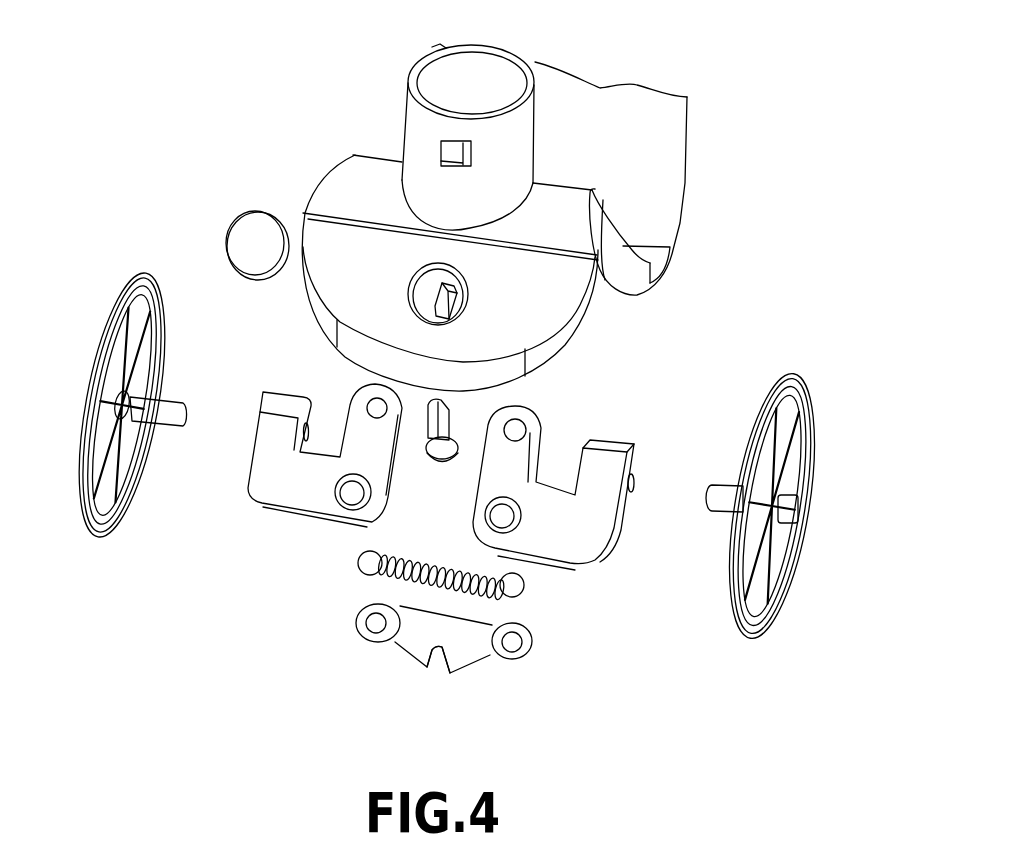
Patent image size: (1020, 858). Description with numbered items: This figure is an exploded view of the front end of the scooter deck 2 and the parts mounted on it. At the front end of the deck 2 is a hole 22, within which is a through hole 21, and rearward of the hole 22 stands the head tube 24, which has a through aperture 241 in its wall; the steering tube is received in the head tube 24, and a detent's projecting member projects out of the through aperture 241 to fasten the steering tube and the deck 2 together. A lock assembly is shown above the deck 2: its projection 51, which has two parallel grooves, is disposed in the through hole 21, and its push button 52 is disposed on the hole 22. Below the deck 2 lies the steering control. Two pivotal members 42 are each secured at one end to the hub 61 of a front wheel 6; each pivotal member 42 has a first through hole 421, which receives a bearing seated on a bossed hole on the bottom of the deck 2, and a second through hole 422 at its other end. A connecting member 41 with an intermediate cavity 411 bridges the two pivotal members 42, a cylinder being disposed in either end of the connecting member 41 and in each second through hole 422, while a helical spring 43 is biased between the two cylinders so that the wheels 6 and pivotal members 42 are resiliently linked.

The deck 2 is at (645, 180).
The through hole 21 is at (440, 288).
The hole 22 is at (423, 284).
The head tube 24 is at (515, 163).
The through aperture 241 is at (473, 153).
The connecting member 41 is at (410, 645).
The intermediate cavity 411 is at (427, 686).
The pivotal member 42 is at (283, 478).
The first through hole 421 is at (350, 507).
The second through hole 422 is at (375, 408).
The helical spring 43 is at (473, 593).
The projection 51 is at (428, 407).
The push button 52 is at (248, 242).
The front wheel 6 is at (104, 525).
The hub 61 is at (170, 418).